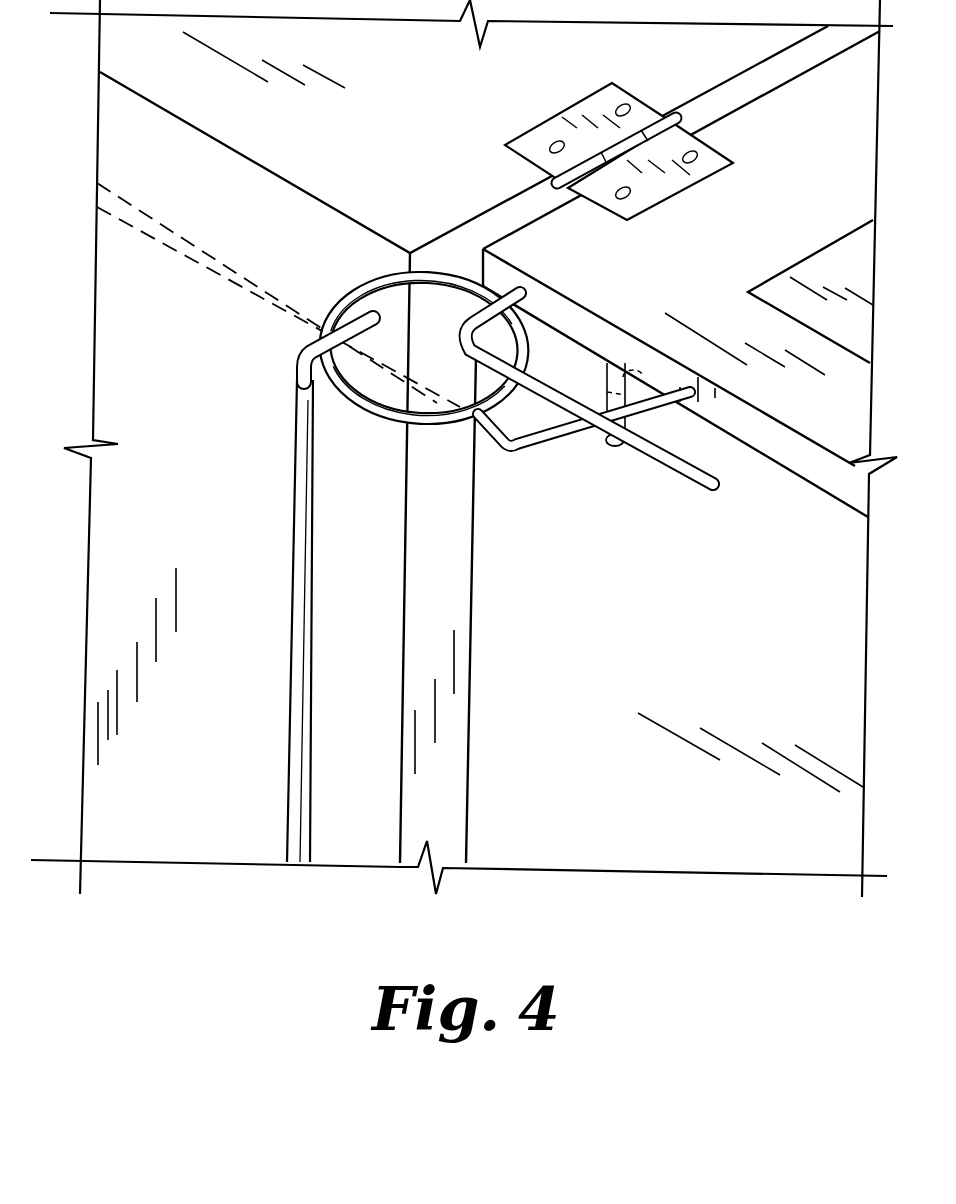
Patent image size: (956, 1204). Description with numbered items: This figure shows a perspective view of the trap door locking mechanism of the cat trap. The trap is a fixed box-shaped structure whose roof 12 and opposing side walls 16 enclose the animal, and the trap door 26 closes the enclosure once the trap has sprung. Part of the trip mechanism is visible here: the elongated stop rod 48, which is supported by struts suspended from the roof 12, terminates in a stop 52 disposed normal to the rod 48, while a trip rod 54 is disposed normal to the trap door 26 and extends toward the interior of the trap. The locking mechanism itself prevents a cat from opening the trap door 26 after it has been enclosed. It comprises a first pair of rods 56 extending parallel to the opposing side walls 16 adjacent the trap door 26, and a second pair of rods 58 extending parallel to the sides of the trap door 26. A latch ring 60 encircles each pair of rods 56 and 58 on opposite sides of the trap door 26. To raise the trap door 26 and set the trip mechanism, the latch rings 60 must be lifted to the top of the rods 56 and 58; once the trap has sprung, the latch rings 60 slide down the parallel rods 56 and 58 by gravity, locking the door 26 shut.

The roof 12 is at (396, 171).
The side walls 16 is at (240, 247).
The trap door 26 is at (818, 487).
The stop rod 48 is at (251, 298).
The stop 52 is at (542, 437).
The trip rod 54 is at (678, 428).
The first pair of rods 56 is at (296, 465).
The second pair of rods 58 is at (614, 447).
The latch ring 60 is at (364, 273).